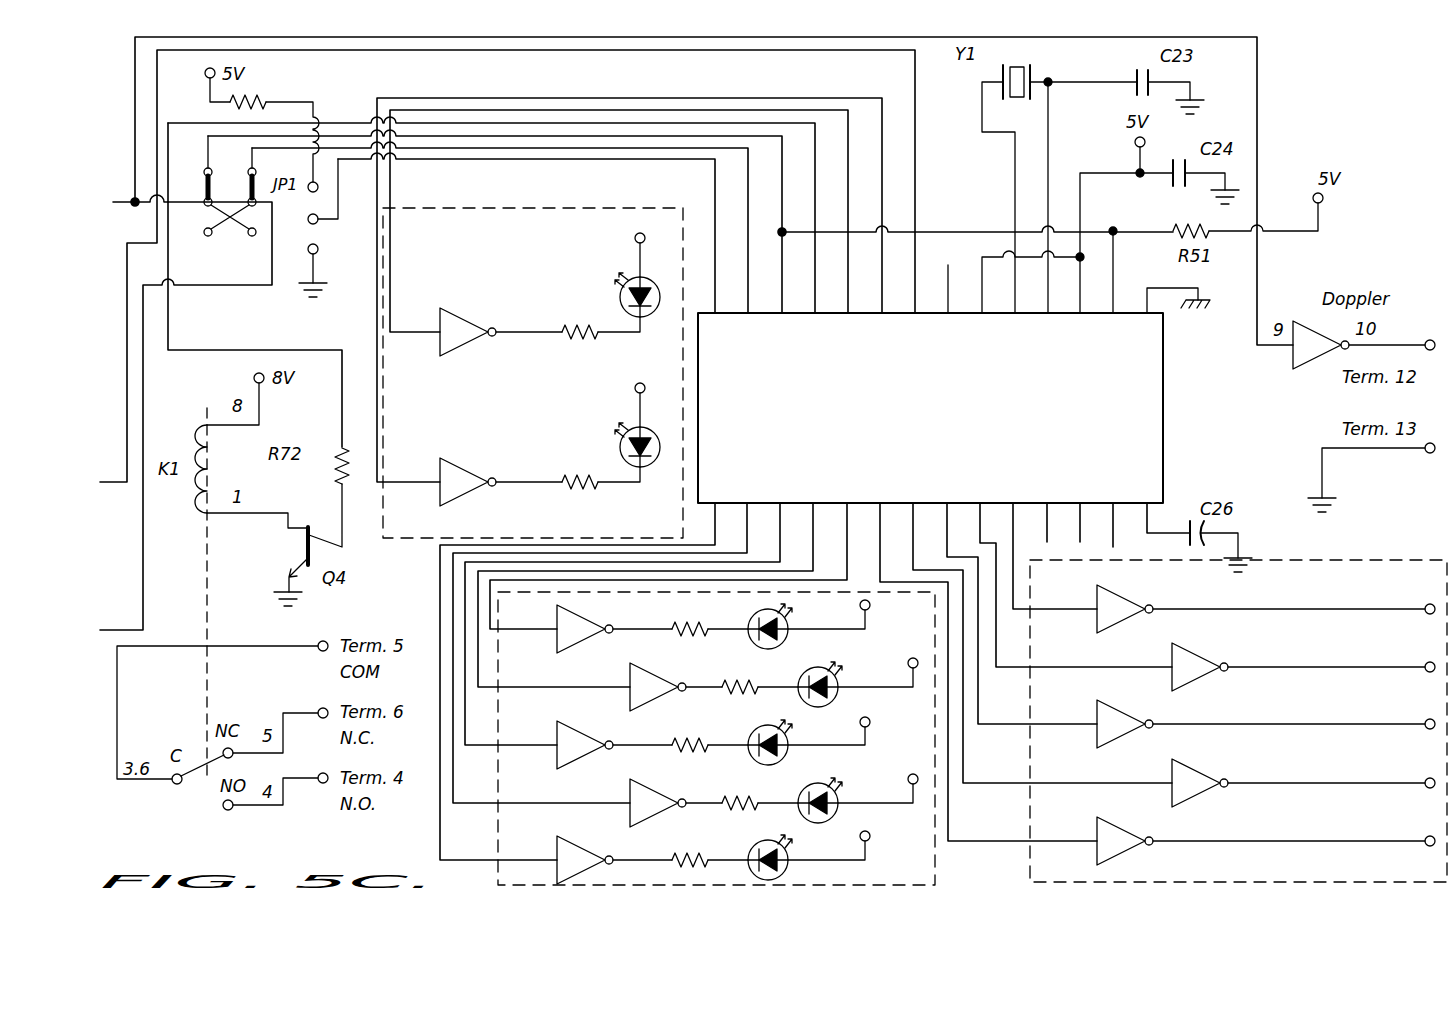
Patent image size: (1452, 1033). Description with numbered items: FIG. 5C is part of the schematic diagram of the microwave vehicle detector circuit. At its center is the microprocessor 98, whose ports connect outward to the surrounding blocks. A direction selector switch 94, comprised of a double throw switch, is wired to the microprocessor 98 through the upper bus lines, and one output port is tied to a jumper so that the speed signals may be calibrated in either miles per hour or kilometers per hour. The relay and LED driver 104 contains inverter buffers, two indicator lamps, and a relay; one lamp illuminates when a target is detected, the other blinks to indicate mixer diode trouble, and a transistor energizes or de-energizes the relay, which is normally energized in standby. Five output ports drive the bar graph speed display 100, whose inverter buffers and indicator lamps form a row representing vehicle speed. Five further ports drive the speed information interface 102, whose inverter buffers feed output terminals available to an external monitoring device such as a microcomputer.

The direction selector switch 94 is at (232, 286).
The microprocessor 98 is at (1163, 395).
The bar graph speed display 100 is at (935, 850).
The speed information interface 102 is at (1387, 557).
The relay and LED driver 104 is at (537, 206).